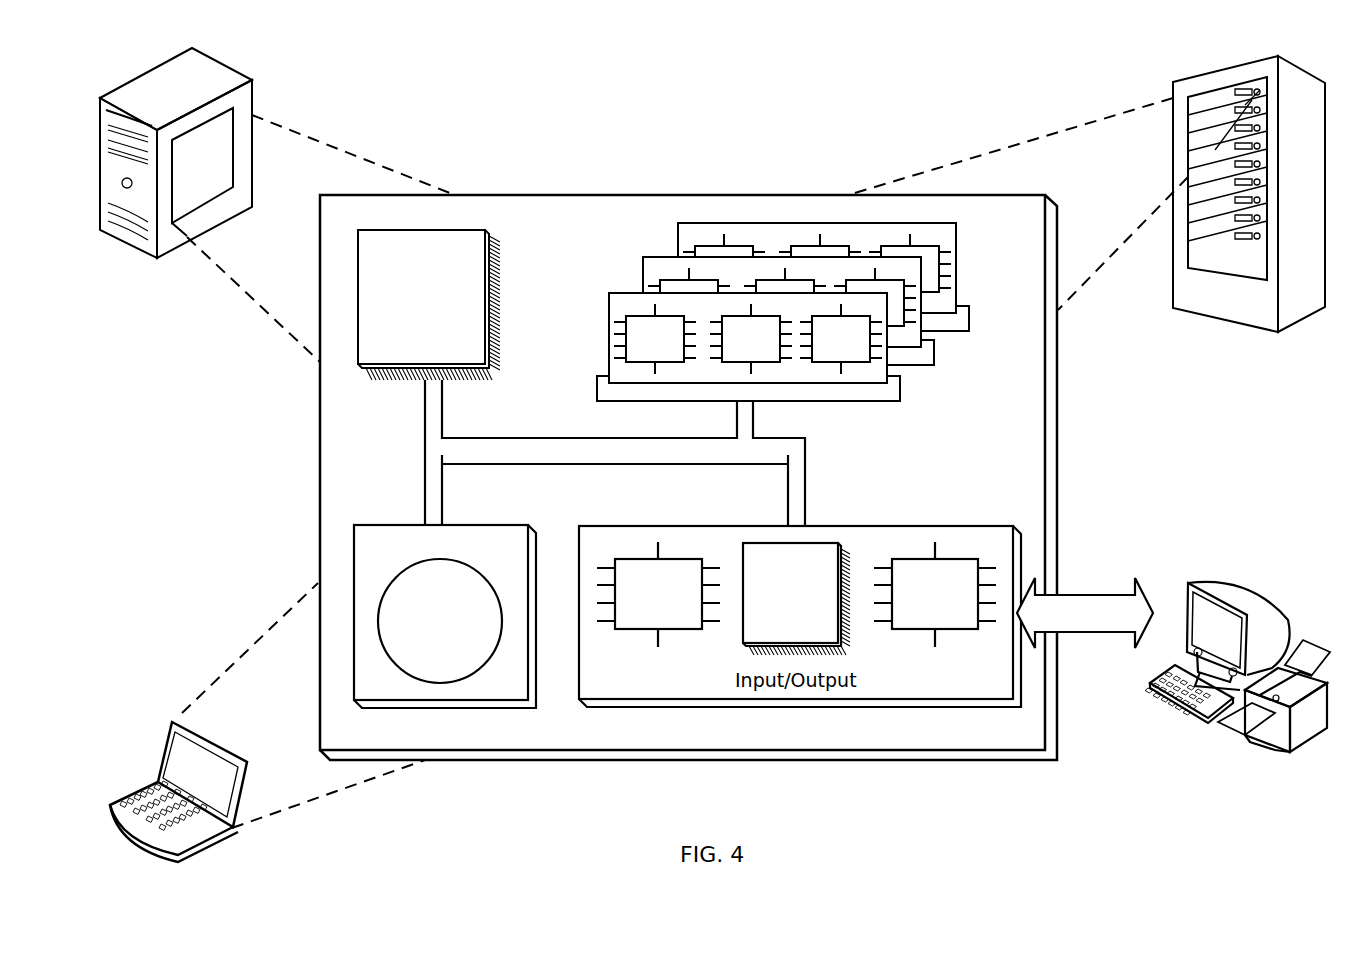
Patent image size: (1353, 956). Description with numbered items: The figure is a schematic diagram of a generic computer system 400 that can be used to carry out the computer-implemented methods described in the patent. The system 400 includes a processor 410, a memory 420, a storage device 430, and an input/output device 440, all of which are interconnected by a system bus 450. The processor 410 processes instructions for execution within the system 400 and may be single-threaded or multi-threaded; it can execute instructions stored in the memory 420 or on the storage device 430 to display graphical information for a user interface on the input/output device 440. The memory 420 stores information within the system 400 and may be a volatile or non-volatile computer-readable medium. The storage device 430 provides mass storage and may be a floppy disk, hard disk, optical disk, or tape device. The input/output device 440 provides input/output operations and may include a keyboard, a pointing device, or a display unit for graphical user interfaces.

The computer system 400 is at (506, 70).
The processor 410 is at (429, 305).
The memory 420 is at (965, 362).
The storage device 430 is at (445, 616).
The input/output device 440 is at (1190, 583).
The system bus 450 is at (605, 457).